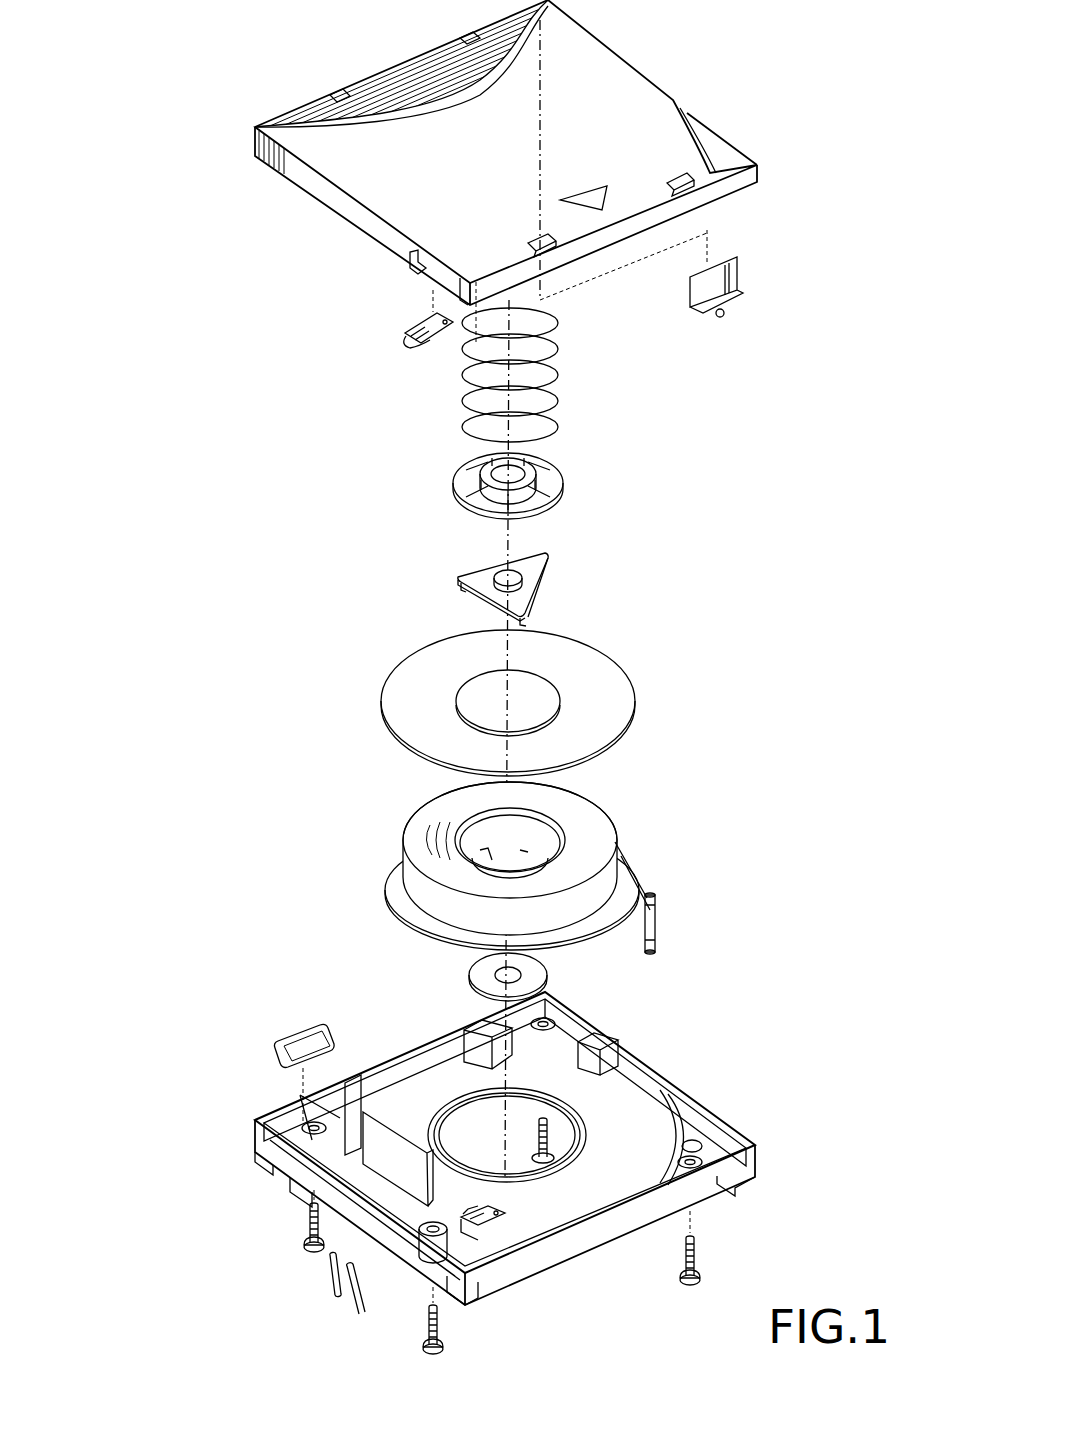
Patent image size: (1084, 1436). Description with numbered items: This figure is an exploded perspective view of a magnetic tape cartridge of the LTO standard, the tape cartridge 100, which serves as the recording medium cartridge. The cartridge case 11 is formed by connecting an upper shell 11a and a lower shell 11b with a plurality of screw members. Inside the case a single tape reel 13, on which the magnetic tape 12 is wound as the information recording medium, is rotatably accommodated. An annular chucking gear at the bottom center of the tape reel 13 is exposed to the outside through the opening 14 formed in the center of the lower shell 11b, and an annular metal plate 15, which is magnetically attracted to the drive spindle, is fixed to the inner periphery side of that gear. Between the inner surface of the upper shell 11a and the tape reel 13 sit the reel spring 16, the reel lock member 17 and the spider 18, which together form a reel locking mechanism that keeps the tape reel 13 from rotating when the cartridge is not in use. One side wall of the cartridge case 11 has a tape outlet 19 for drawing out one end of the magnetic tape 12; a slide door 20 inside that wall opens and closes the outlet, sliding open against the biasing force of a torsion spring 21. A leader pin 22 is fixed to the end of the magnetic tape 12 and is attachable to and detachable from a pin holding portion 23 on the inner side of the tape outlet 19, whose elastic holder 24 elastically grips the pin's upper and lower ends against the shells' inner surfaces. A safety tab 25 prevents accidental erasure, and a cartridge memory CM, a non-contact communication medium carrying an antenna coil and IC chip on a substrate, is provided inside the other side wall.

The tape cartridge 100 is at (197, 136).
The cartridge case 11 is at (292, 188).
The upper shell 11a is at (597, 72).
The lower shell 11b is at (640, 1060).
The magnetic tape 12 is at (590, 823).
The tape reel 13 is at (368, 662).
The opening 14 is at (555, 1150).
The metal plate 15 is at (480, 968).
The reel spring 16 is at (560, 375).
The reel lock member 17 is at (455, 478).
The spider 18 is at (545, 580).
The tape outlet 19 is at (412, 266).
The slide door 20 is at (393, 1140).
The torsion spring 21 is at (323, 1297).
The leader pin 22 is at (655, 900).
The pin holding portion 23 is at (457, 1297).
The elastic holder 24 is at (420, 314).
The safety tab 25 is at (740, 268).
The cartridge memory CM is at (277, 1053).